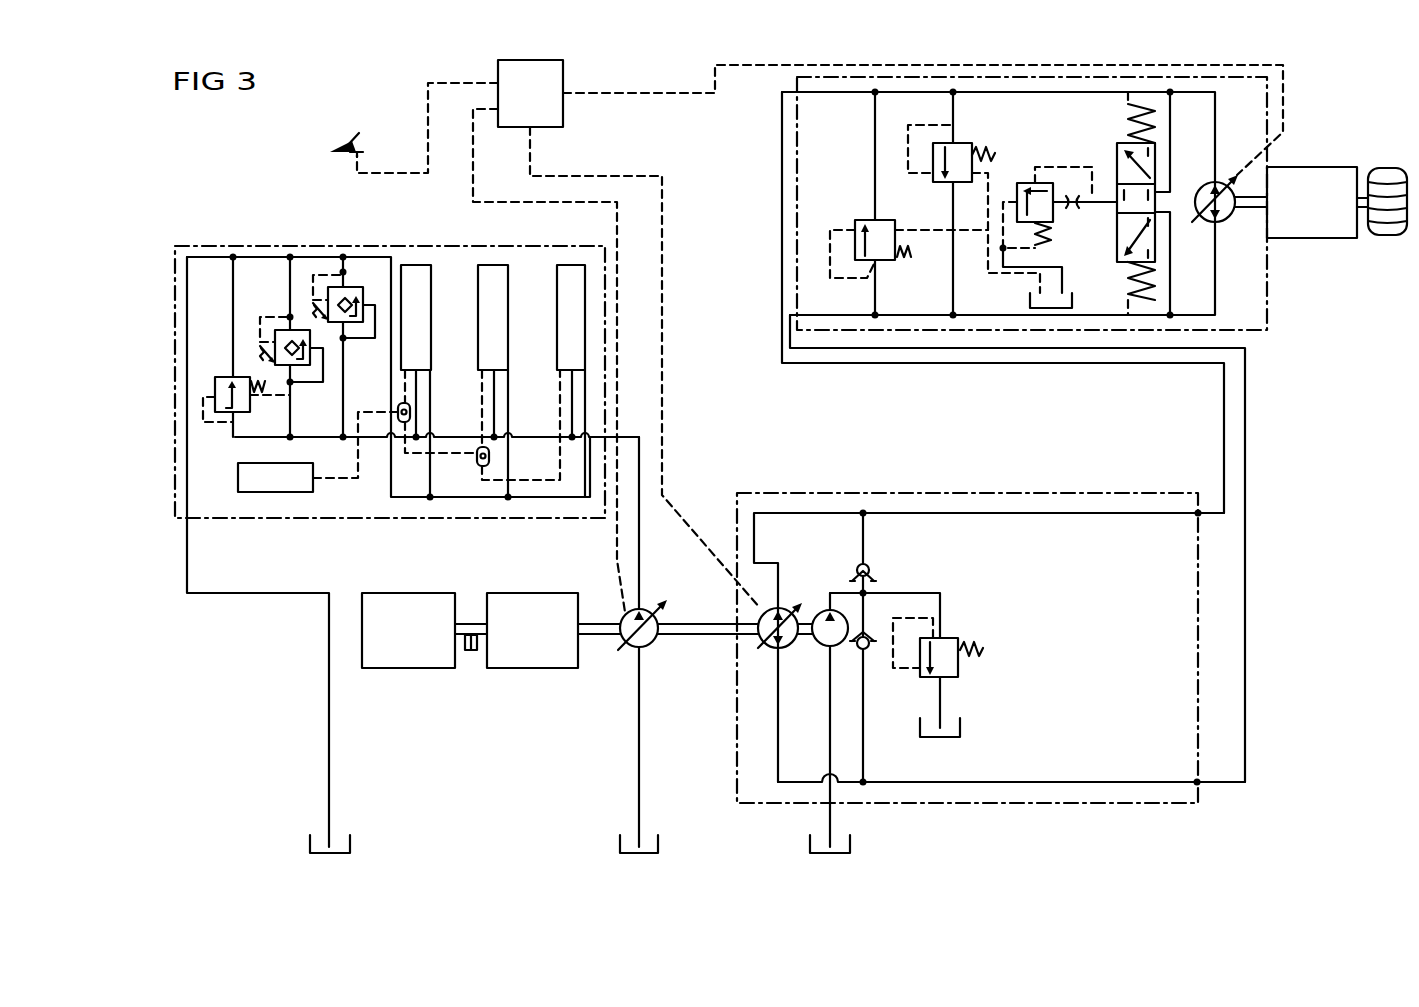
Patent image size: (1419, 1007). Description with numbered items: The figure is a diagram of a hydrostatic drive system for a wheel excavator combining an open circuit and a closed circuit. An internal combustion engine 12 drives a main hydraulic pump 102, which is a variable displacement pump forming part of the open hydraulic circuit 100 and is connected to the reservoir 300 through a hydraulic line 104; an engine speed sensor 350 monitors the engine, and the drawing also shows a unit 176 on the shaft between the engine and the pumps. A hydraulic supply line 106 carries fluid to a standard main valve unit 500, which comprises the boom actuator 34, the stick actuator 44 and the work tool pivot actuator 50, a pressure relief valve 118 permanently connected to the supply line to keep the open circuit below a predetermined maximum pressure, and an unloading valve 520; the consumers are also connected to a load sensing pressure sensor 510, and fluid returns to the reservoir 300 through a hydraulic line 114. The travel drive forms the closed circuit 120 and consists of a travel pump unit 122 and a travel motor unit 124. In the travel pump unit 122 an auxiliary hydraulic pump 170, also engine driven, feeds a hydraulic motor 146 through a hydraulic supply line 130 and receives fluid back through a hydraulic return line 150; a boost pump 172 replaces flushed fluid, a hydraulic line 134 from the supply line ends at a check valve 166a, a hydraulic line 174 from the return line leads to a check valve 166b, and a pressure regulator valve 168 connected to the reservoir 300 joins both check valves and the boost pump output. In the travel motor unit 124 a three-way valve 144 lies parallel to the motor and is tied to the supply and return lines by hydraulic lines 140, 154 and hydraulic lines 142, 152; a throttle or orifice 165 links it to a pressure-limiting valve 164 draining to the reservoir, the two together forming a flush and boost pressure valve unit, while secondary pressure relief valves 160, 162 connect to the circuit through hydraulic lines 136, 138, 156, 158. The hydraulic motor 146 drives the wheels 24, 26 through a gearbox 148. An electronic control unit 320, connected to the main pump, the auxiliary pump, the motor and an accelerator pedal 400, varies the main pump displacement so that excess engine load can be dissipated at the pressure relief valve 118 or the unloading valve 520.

The internal combustion engine 12 is at (408, 593).
The wheel 24 is at (1386, 237).
The wheel 26 is at (1385, 235).
The boom actuator 34 is at (571, 265).
The stick actuator 44 is at (416, 265).
The work tool pivot actuator 50 is at (493, 265).
The open hydraulic circuit 100 is at (630, 696).
The main hydraulic pump 102 is at (648, 650).
The hydraulic line 104 is at (639, 772).
The hydraulic supply line 106 is at (663, 639).
The hydraulic line 114 is at (329, 745).
The pressure relief valve 118 is at (348, 287).
The closed circuit 120 is at (1086, 530).
The travel pump unit 122 is at (1135, 478).
The travel motor unit 124 is at (1278, 98).
The hydraulic supply line 130 is at (756, 540).
The hydraulic line 134 is at (863, 540).
The hydraulic line 136 is at (875, 140).
The hydraulic line 138 is at (950, 122).
The hydraulic line 140 is at (1128, 112).
The hydraulic line 142 is at (1170, 110).
The three-way valve 144 is at (1106, 203).
The hydraulic motor 146 is at (1203, 183).
The gearbox 148 is at (1310, 238).
The hydraulic return line 150 is at (1245, 600).
The hydraulic line 152 is at (1170, 300).
The hydraulic line 154 is at (1128, 292).
The hydraulic line 156 is at (953, 298).
The hydraulic line 158 is at (875, 302).
The secondary pressure relief valve 160 is at (875, 220).
The secondary pressure relief valve 162 is at (955, 143).
The pressure-limiting valve 164 is at (1035, 183).
The throttle or orifice 165 is at (1072, 208).
The check valve 166a is at (873, 578).
The check valve 166b is at (873, 650).
The pressure regulator valve 168 is at (940, 638).
The auxiliary hydraulic pump 170 is at (762, 660).
The boost pump 172 is at (818, 648).
The hydraulic line 174 is at (863, 765).
The transmission 176 is at (530, 593).
The reservoir 300 is at (350, 843).
The electronic control unit 320 is at (563, 108).
The engine speed sensor 350 is at (470, 650).
The accelerator pedal 400 is at (346, 135).
The main valve unit 500 is at (258, 240).
The load sensing pressure sensor 510 is at (280, 492).
The unloading valve 520 is at (222, 377).